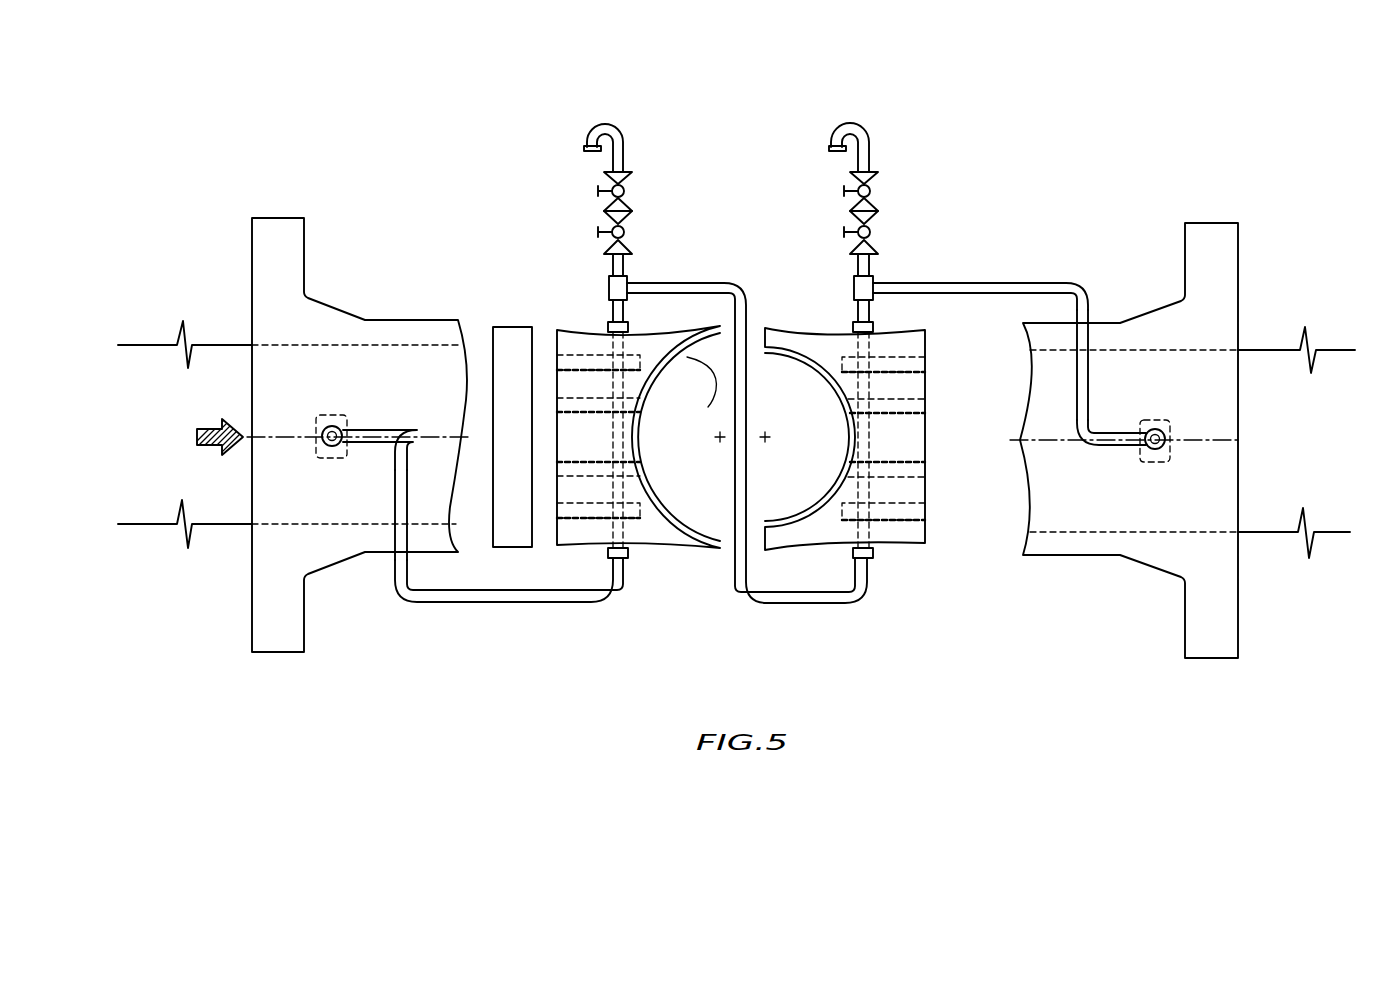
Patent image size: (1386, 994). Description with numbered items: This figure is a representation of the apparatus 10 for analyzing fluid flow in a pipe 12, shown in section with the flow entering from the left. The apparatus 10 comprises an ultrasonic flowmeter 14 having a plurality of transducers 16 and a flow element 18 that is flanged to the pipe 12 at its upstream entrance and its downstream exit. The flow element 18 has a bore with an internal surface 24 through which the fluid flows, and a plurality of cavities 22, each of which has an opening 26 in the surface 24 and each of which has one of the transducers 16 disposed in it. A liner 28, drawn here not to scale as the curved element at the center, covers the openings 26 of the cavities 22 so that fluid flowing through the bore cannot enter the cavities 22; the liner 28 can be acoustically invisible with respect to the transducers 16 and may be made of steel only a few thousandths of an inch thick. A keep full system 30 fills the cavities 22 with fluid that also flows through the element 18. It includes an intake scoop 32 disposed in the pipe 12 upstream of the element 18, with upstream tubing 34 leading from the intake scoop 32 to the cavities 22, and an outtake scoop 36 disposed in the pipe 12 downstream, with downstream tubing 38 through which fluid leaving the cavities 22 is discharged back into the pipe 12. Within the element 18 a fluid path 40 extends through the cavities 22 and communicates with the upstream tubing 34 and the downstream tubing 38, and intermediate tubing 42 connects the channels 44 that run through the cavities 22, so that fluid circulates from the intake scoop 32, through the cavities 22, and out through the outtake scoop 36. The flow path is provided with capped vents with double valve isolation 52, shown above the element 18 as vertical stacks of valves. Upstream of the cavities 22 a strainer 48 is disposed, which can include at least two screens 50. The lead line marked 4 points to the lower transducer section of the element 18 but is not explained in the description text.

The transducer body section 4 is at (890, 555).
The flow meter assembly 10 is at (1258, 207).
The process pipe 12 is at (160, 328).
The meter body 14 is at (707, 580).
The bolt/port passages 16 is at (573, 365).
The flange 18 is at (280, 207).
The transducer cavity 22 is at (640, 508).
The vent passage 24 is at (703, 338).
The liner 26 is at (808, 368).
The liner 28 is at (683, 514).
The pressure equalization tubing 30 is at (403, 607).
The upstream pressure tap fitting 32 is at (331, 415).
The tubing bend 34 is at (395, 487).
The downstream pressure tap fitting 36 is at (1168, 420).
The tubing segment 38 is at (1089, 380).
The vent fitting 40 is at (597, 325).
The cross-connecting tubing 42 is at (748, 305).
The transducer passage 44 is at (612, 447).
The gap 48 is at (508, 312).
The spacer 50 is at (493, 385).
The capped vent with double valve isolation 52 is at (585, 152).